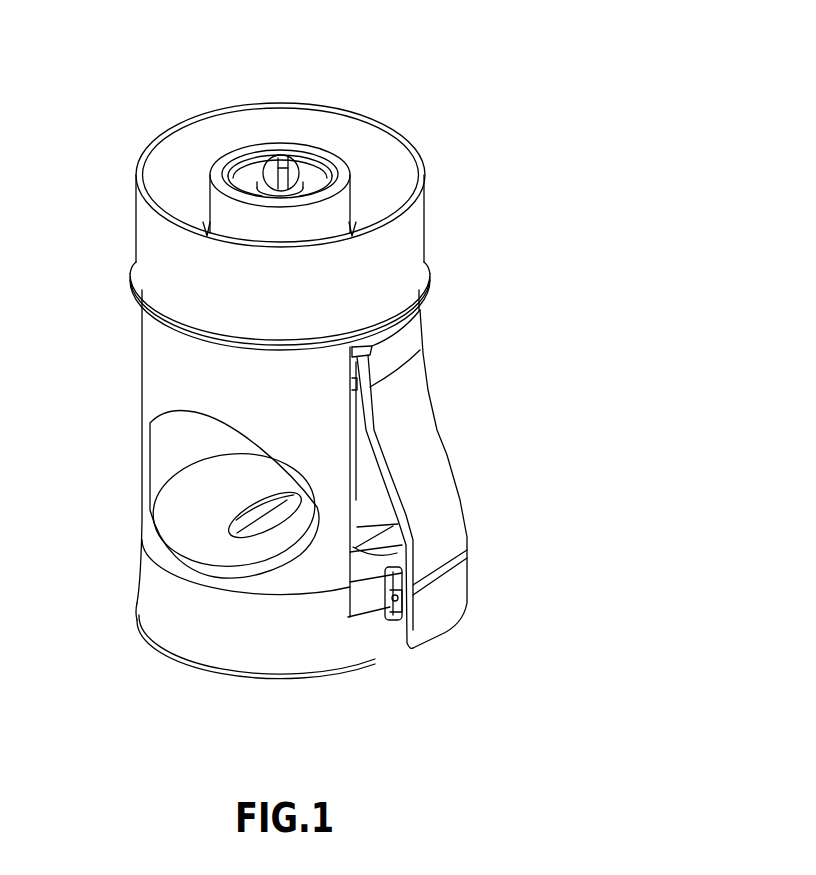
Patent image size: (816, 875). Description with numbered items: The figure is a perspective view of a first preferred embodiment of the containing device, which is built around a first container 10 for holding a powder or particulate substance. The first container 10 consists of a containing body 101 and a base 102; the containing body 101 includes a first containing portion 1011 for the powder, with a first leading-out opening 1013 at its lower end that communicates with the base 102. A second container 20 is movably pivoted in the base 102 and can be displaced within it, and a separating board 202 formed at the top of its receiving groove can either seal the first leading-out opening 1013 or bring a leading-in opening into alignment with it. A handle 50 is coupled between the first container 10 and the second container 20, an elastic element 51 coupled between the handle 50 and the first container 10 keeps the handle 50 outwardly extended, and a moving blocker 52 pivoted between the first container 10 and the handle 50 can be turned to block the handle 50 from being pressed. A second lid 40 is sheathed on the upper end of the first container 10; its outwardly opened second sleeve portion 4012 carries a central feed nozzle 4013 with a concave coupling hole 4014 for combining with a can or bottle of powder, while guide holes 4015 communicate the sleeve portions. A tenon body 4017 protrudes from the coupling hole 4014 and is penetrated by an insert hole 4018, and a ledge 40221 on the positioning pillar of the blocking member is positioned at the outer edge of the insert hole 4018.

The second lid 40 is at (413, 247).
The second sleeve portion 4012 is at (188, 196).
The feed nozzle 4013 is at (223, 212).
The coupling hole 4014 is at (243, 188).
The guide holes 4015 is at (353, 222).
The tenon body 4017 is at (301, 196).
The insert hole 4018 is at (277, 180).
The ledge 40221 is at (292, 157).
The first container 10 is at (85, 403).
The containing body 101 is at (143, 457).
The first containing portion 1011 is at (172, 445).
The first leading-out opening 1013 is at (253, 515).
The base 102 is at (148, 590).
The handle 50 is at (415, 407).
The elastic element 51 is at (372, 470).
The moving blocker 52 is at (398, 523).
The separating board 202 is at (374, 572).
The second container 20 is at (382, 657).